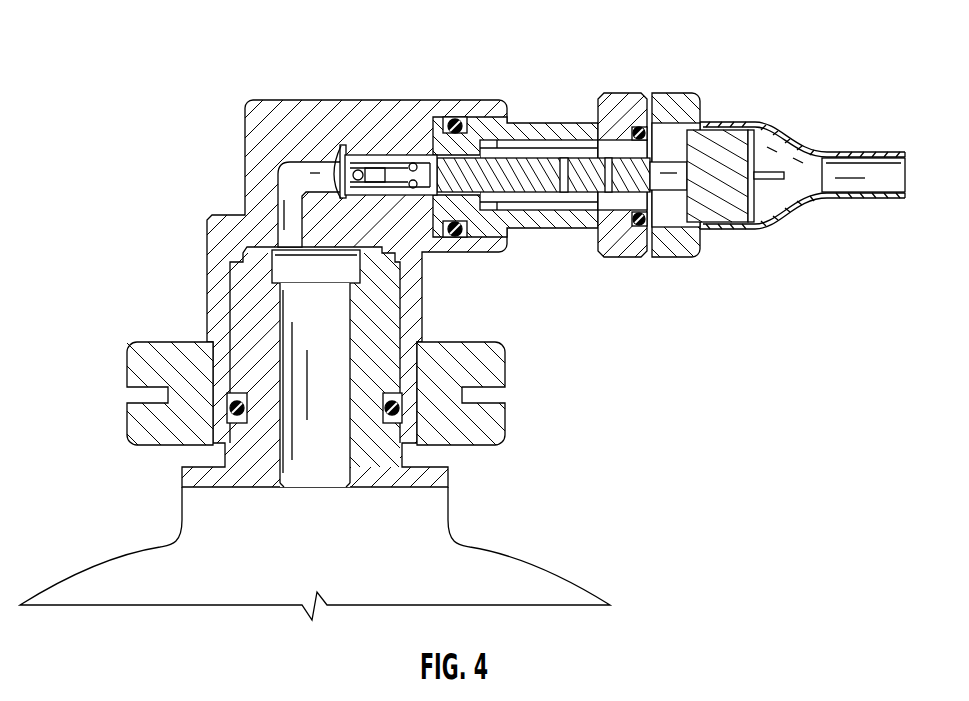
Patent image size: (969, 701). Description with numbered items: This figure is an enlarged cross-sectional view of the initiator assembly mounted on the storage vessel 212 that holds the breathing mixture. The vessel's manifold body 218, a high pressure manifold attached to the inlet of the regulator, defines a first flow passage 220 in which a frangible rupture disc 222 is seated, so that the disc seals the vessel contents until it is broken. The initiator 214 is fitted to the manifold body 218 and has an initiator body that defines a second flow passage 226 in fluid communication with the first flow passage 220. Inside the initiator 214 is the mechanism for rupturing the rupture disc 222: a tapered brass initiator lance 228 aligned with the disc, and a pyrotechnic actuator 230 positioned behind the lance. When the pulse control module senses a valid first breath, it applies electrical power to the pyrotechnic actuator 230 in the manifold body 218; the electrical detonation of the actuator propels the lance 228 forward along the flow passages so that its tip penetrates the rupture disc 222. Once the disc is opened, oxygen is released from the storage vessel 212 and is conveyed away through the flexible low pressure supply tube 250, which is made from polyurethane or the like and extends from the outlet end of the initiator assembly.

The storage vessel 212 is at (531, 563).
The initiator 214 is at (561, 229).
The manifold body 218 is at (245, 149).
The first flow passage 220 is at (282, 187).
The rupture disc 222 is at (352, 171).
The second flow passage 226 is at (667, 168).
The initiator lance 228 is at (538, 172).
The pyrotechnic actuator 230 is at (724, 206).
The low pressure supply tube 250 is at (893, 203).